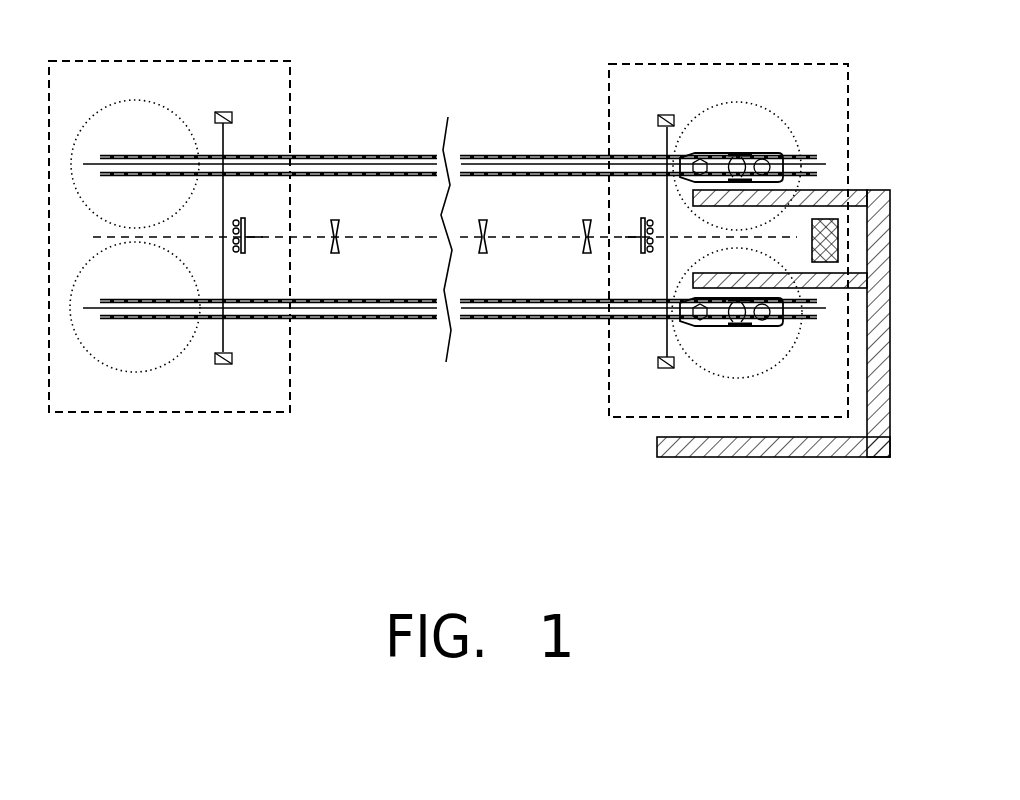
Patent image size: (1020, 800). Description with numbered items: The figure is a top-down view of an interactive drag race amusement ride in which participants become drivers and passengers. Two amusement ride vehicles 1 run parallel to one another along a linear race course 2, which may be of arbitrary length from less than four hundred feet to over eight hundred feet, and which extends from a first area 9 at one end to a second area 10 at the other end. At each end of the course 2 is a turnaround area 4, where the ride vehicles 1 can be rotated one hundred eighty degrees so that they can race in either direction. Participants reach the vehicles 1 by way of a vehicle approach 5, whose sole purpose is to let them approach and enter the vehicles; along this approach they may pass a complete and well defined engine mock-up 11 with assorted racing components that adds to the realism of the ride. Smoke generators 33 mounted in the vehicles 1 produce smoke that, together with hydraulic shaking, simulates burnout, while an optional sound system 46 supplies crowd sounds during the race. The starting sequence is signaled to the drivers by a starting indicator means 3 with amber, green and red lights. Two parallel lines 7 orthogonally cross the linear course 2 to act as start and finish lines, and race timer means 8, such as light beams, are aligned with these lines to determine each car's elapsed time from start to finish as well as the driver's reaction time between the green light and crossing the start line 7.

The amusement ride vehicle 1 is at (757, 245).
The linear race course 2 is at (326, 150).
The starting indicator means 3 is at (246, 215).
The turnaround area 4 is at (172, 100).
The vehicle approach 5 is at (779, 334).
The parallel lines 7 is at (226, 136).
The race timer means 8 is at (232, 110).
The first area 9 is at (676, 67).
The second area 10 is at (262, 66).
The engine mock-up 11 is at (824, 214).
The smoke generator 33 is at (770, 152).
The sound system 46 is at (336, 219).